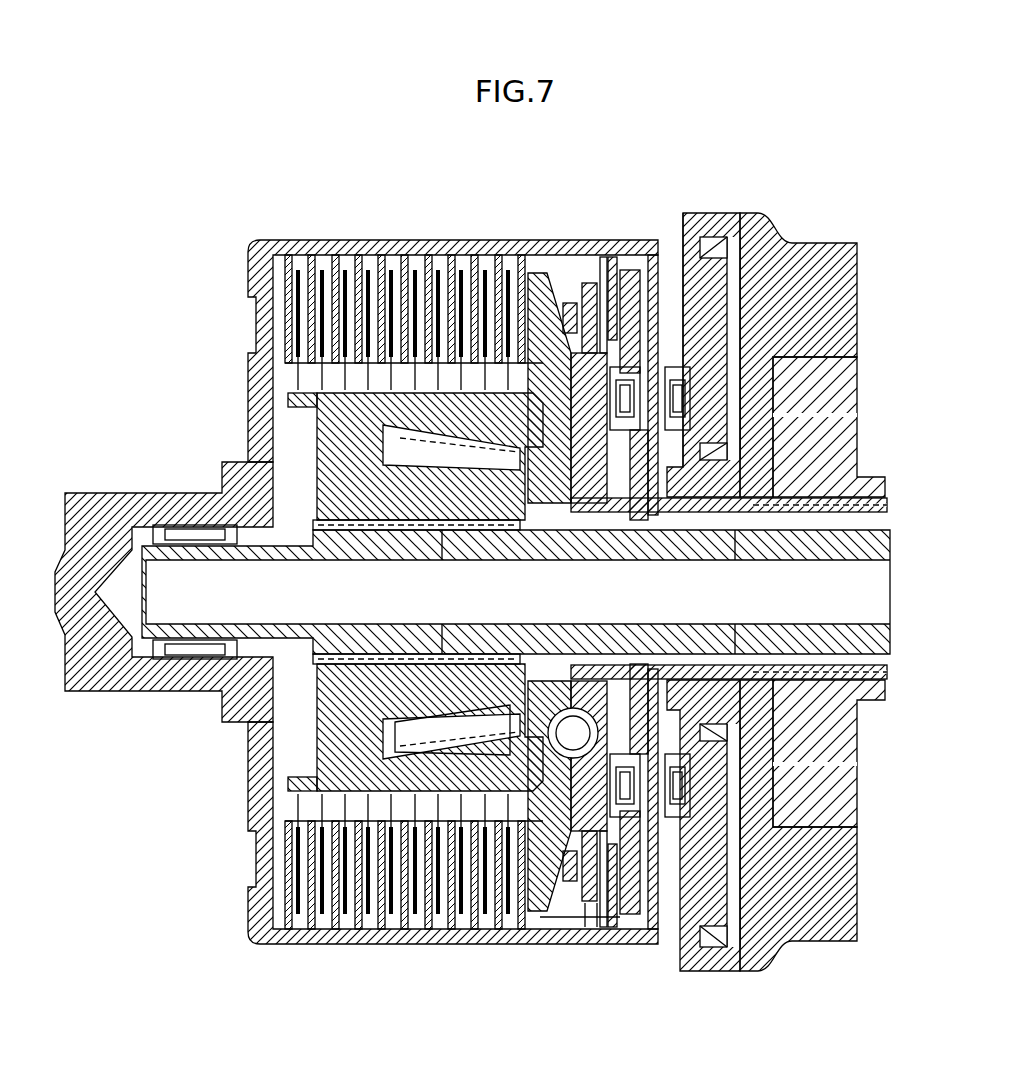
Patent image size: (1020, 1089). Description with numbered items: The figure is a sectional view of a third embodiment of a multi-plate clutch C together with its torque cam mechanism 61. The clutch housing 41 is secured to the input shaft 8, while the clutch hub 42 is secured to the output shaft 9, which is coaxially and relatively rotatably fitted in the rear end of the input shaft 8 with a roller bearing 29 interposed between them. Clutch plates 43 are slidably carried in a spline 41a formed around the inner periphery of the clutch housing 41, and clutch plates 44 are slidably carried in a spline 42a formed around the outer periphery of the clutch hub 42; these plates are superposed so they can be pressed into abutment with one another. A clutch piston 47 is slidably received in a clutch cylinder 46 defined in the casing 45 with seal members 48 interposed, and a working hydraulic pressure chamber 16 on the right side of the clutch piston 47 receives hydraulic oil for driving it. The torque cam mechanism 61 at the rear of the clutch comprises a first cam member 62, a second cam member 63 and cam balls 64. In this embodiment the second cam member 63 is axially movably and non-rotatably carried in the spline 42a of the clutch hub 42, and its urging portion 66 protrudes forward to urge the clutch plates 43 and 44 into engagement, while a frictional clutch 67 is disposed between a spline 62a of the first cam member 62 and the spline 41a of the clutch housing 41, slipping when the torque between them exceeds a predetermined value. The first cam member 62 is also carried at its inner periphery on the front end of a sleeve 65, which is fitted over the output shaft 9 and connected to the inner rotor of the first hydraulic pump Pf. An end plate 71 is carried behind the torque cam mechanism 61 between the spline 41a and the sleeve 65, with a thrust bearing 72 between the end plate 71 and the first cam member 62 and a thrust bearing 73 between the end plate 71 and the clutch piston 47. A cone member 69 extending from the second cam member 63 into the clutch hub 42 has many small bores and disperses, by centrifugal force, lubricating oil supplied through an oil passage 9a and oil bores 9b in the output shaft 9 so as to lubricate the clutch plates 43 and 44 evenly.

The input shaft 8 is at (145, 488).
The output shaft 9 is at (516, 636).
The oil passage 9a is at (688, 565).
The oil bores 9b is at (444, 623).
The working hydraulic pressure chamber 16 is at (730, 848).
The roller bearing 29 is at (190, 533).
The clutch housing 41 is at (235, 365).
The spline 41a is at (468, 252).
The clutch hub 42 is at (340, 537).
The spline 42a is at (720, 516).
The clutch plates 43 is at (400, 262).
The clutch plates 44 is at (445, 368).
The casing 45 is at (812, 337).
The clutch cylinder 46 is at (710, 262).
The clutch piston 47 is at (680, 330).
The seal members 48 is at (712, 712).
The torque cam mechanism 61 is at (512, 750).
The first cam member 62 is at (627, 838).
The spline 62a is at (552, 918).
The second cam member 63 is at (470, 790).
The cam balls 64 is at (574, 730).
The sleeve 65 is at (784, 449).
The urging portion 66 is at (540, 262).
The frictional clutch 67 is at (592, 935).
The cone member 69 is at (440, 733).
The end plate 71 is at (738, 515).
The thrust bearing 72 is at (570, 353).
The thrust bearing 73 is at (682, 380).
The multi-plate clutch C is at (522, 234).
The first hydraulic pump Pf is at (866, 395).